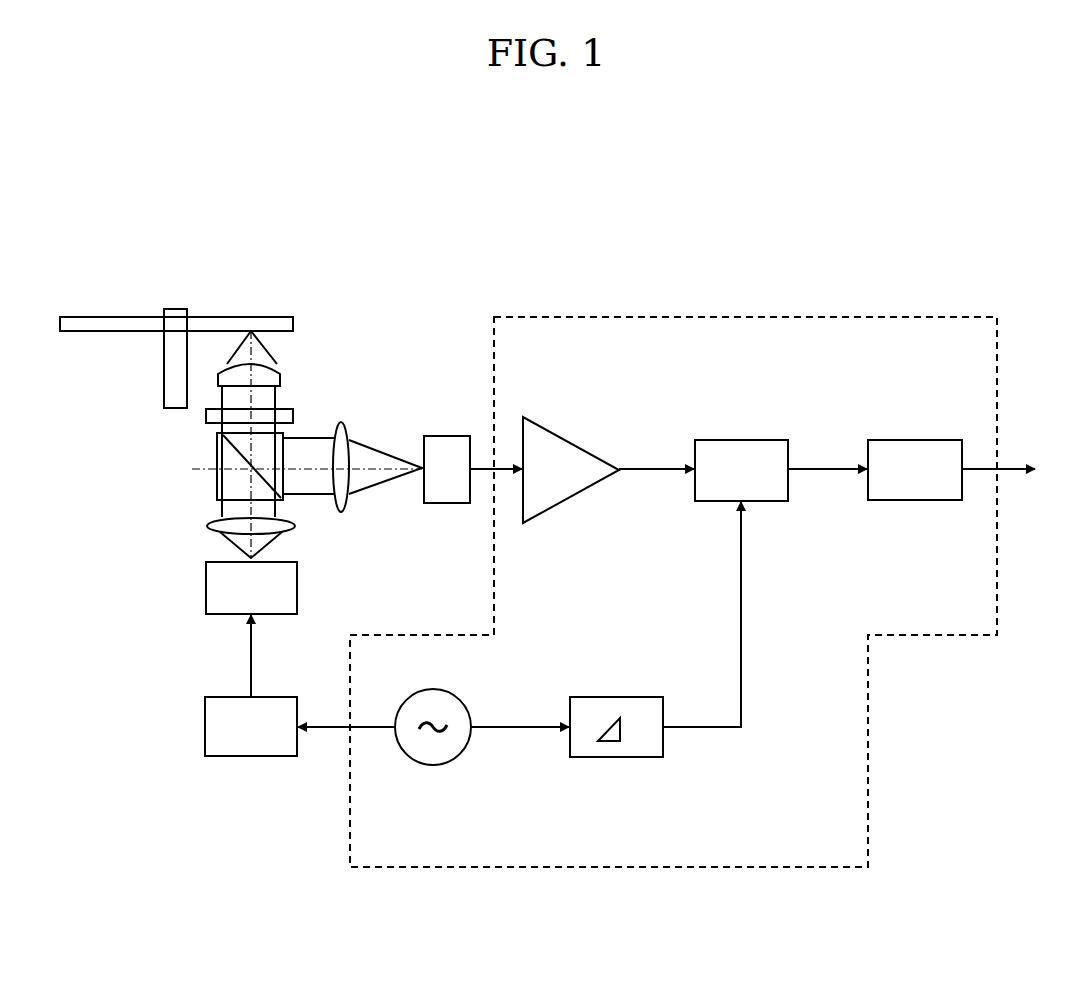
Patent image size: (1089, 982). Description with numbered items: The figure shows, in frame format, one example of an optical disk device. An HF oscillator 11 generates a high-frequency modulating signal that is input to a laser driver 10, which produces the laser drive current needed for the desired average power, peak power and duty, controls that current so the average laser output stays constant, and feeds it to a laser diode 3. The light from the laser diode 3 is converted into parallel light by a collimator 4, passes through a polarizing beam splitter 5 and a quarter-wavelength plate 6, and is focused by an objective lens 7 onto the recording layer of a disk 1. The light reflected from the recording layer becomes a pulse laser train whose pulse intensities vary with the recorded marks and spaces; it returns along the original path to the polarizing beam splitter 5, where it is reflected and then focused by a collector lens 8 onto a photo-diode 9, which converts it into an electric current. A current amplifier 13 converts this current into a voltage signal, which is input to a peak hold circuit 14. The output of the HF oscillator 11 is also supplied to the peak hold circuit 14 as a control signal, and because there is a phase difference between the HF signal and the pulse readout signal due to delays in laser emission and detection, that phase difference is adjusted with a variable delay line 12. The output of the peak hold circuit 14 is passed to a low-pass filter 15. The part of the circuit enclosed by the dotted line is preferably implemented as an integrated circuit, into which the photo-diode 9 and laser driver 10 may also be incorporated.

The disk 1 is at (105, 323).
The laser diode 3 is at (223, 587).
The collimator 4 is at (228, 528).
The polarizing beam splitter 5 is at (228, 482).
The quarter-wavelength plate 6 is at (273, 420).
The objective lens 7 is at (278, 365).
The collector lens 8 is at (338, 483).
The photo-diode 9 is at (446, 440).
The laser driver 10 is at (252, 742).
The HF oscillator 11 is at (442, 753).
The variable delay line 12 is at (625, 750).
The current amplifier 13 is at (550, 440).
The peak hold circuit 14 is at (760, 447).
The low-pass filter 15 is at (915, 450).